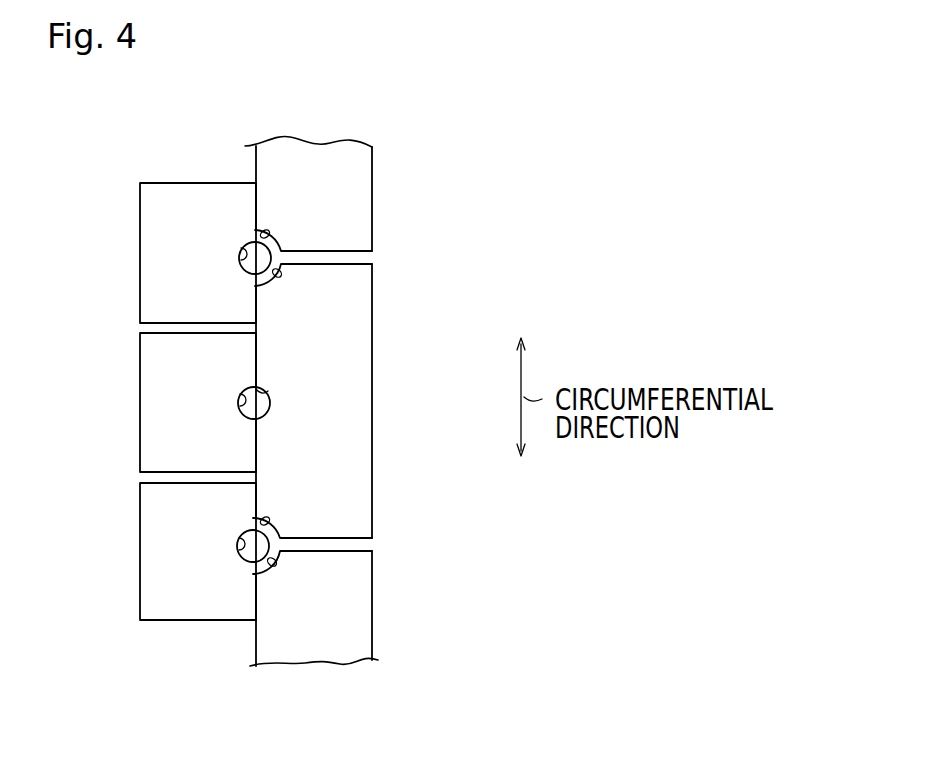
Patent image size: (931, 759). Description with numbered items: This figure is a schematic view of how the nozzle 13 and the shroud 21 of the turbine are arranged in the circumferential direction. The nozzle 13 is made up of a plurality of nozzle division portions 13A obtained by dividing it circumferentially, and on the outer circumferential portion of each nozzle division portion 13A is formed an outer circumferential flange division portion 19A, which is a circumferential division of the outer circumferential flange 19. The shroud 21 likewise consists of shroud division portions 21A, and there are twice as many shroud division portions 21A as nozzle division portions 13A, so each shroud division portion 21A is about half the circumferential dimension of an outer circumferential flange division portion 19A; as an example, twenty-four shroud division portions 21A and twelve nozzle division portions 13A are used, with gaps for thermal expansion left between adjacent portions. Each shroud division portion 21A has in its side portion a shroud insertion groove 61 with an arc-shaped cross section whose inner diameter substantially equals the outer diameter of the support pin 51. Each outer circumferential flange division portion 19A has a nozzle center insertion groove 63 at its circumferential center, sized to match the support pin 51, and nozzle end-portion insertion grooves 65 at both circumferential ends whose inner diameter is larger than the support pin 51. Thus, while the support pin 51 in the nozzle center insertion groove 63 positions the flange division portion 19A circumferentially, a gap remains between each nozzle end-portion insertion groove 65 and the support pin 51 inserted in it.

The outer circumferential flange 19 is at (377, 431).
The nozzle 13 is at (377, 431).
The outer circumferential flange division portion 19A is at (377, 401).
The nozzle division portion 13A is at (353, 200).
The shroud 21 is at (158, 442).
The shroud division portion 21A is at (163, 255).
The support pin 51 is at (263, 256).
The shroud insertion groove 61 is at (243, 241).
The nozzle center insertion groove 63 is at (258, 386).
The nozzle end-portion insertion groove 65 is at (258, 231).